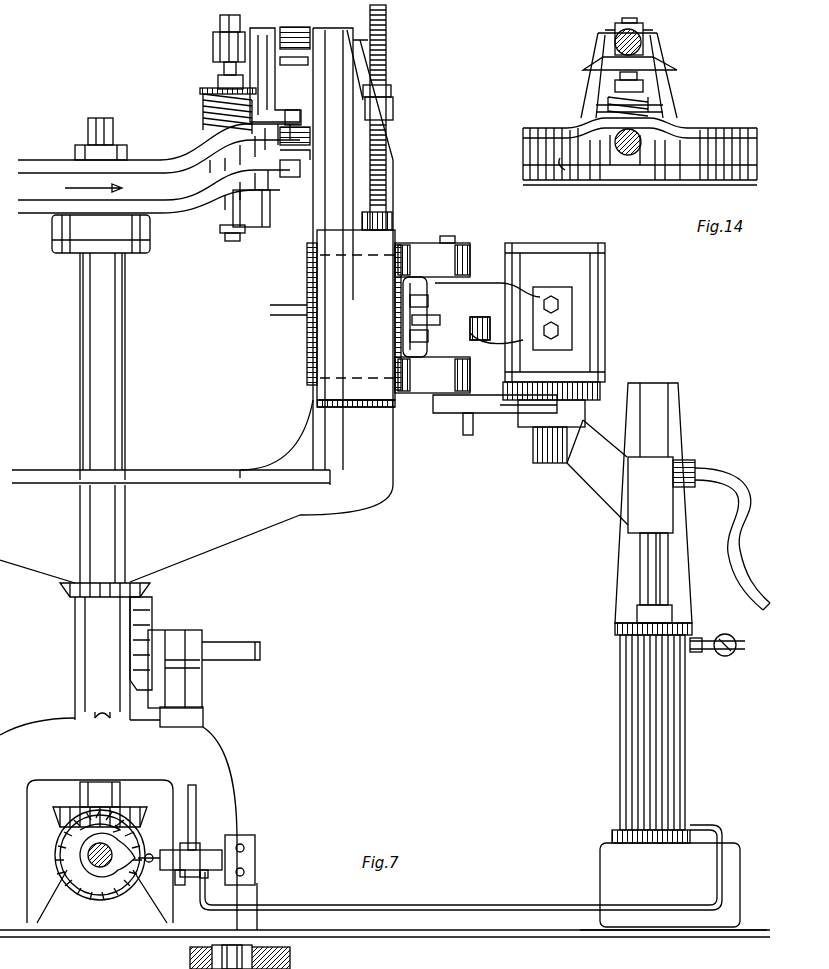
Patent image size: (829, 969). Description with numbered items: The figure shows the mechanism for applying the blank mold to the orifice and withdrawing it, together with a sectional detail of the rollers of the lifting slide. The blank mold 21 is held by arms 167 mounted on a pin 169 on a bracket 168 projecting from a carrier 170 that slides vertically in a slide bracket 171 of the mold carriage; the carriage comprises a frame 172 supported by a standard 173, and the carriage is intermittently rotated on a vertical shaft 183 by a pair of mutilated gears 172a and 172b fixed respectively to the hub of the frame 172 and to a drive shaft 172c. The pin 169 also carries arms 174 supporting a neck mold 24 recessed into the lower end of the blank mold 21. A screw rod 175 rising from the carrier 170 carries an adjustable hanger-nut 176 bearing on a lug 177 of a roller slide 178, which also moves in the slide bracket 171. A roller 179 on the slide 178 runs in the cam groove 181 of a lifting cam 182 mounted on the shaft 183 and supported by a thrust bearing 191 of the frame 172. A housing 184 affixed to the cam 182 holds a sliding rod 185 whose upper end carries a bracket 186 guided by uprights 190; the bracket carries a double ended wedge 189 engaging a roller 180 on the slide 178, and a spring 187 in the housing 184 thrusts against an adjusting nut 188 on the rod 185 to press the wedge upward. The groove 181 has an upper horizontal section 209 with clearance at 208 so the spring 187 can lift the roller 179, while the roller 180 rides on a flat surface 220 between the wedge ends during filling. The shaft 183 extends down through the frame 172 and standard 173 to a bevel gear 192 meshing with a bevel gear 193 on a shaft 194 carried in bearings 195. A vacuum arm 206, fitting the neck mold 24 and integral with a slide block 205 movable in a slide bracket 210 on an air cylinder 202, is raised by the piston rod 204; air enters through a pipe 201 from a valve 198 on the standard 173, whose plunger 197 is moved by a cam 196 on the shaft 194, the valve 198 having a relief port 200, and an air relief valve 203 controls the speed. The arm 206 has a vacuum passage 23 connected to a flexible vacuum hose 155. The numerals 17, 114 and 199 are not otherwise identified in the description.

In FIG. 7, the clamping unit 17 is at (580, 243).
In FIG. 7, the blank mold 21 is at (606, 278).
In FIG. 7, the vacuum passage 23 is at (290, 966).
In FIG. 7, the neck mold 24 is at (600, 392).
In FIG. 7, the pipe 114 is at (738, 845).
In FIG. 7, the flexible vacuum hose 155 is at (752, 607).
In FIG. 7, the arms 167 is at (560, 310).
In FIG. 7, the bracket 168 is at (427, 248).
In FIG. 7, the pin 169 is at (452, 238).
In FIG. 7, the carrier 170 is at (372, 410).
In FIG. 7, the slide bracket 171 is at (390, 172).
In FIG. 7, the frame 172 is at (235, 545).
In FIG. 7, the mutilated gear 172a is at (70, 610).
In FIG. 7, the mutilated gear 172b is at (152, 618).
In FIG. 7, the drive shaft 172c is at (250, 648).
In FIG. 7, the standard 173 is at (195, 735).
In FIG. 7, the arms 174 is at (483, 405).
In FIG. 7, the screw rod 175 is at (365, 85).
In FIG. 7, the hanger-nut 176 is at (391, 90).
In FIG. 7, the lug 177 is at (395, 112).
In FIG. 7, the roller slide 178 is at (340, 135).
In FIG. 7, the roller 179 is at (286, 111).
In FIG. 14, the roller 179 is at (642, 138).
In FIG. 7, the roller 180 is at (388, 42).
In FIG. 14, the roller 180 is at (643, 50).
In FIG. 7, the cam groove 181 is at (160, 188).
In FIG. 14, the cam groove 181 is at (540, 148).
In FIG. 7, the lifting cam 182 is at (58, 160).
In FIG. 14, the lifting cam 182 is at (742, 128).
In FIG. 7, the shaft 183 is at (96, 118).
In FIG. 7, the housing 184 is at (255, 212).
In FIG. 7, the rod 185 is at (232, 241).
In FIG. 14, the rod 185 is at (637, 77).
In FIG. 7, the bracket 186 is at (213, 42).
In FIG. 7, the spring 187 is at (203, 122).
In FIG. 7, the adjusting nut 188 is at (218, 84).
In FIG. 14, the adjusting nut 188 is at (640, 88).
In FIG. 7, the double ended wedge 189 is at (290, 66).
In FIG. 14, the double ended wedge 189 is at (600, 70).
In FIG. 7, the uprights 190 is at (255, 35).
In FIG. 7, the thrust bearing 191 is at (52, 245).
In FIG. 7, the bevel gear 192 is at (125, 812).
In FIG. 7, the bevel gear 193 is at (70, 866).
In FIG. 7, the shaft 194 is at (97, 860).
In FIG. 7, the bearings 195 is at (112, 915).
In FIG. 7, the cam 196 is at (122, 872).
In FIG. 7, the plunger 197 is at (160, 850).
In FIG. 7, the valve 198 is at (222, 845).
In FIG. 7, the valve stem 199 is at (196, 800).
In FIG. 7, the relief port 200 is at (180, 912).
In FIG. 7, the pipe 201 is at (282, 908).
In FIG. 7, the air cylinder 202 is at (620, 755).
In FIG. 7, the air relief valve 203 is at (727, 656).
In FIG. 7, the piston rod 204 is at (645, 573).
In FIG. 7, the slide block 205 is at (652, 475).
In FIG. 7, the vacuum arm 206 is at (598, 482).
In FIG. 7, the clearance 208 is at (300, 122).
In FIG. 14, the clearance 208 is at (600, 120).
In FIG. 7, the upper horizontal section 209 is at (280, 176).
In FIG. 14, the upper horizontal section 209 is at (560, 165).
In FIG. 7, the slide bracket 210 is at (680, 560).
In FIG. 14, the flat surface 220 is at (612, 50).